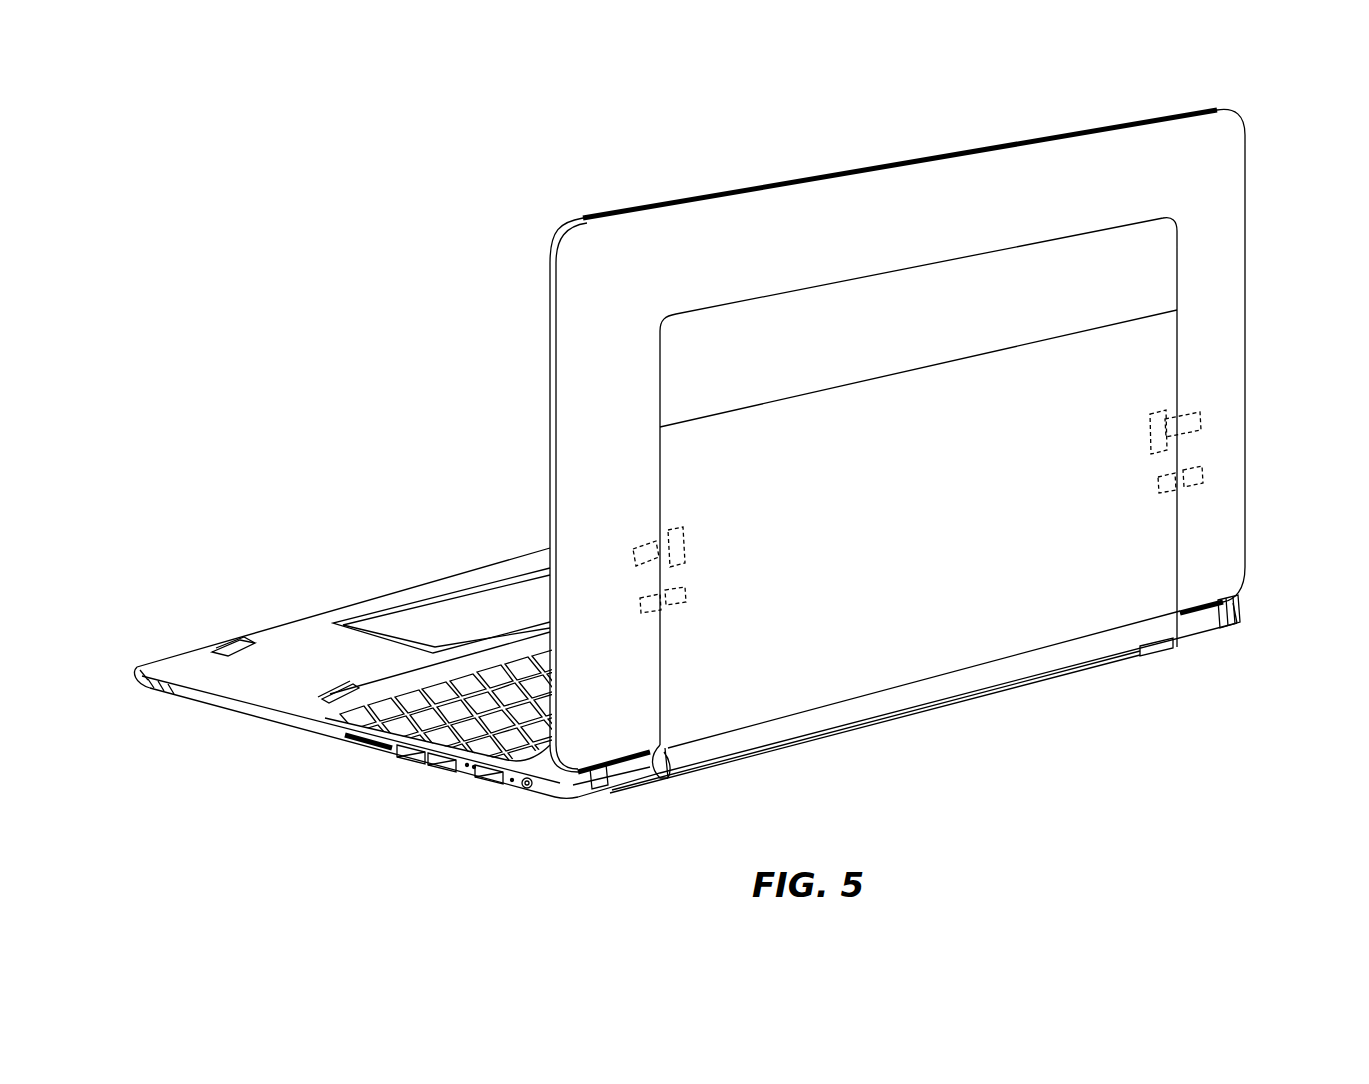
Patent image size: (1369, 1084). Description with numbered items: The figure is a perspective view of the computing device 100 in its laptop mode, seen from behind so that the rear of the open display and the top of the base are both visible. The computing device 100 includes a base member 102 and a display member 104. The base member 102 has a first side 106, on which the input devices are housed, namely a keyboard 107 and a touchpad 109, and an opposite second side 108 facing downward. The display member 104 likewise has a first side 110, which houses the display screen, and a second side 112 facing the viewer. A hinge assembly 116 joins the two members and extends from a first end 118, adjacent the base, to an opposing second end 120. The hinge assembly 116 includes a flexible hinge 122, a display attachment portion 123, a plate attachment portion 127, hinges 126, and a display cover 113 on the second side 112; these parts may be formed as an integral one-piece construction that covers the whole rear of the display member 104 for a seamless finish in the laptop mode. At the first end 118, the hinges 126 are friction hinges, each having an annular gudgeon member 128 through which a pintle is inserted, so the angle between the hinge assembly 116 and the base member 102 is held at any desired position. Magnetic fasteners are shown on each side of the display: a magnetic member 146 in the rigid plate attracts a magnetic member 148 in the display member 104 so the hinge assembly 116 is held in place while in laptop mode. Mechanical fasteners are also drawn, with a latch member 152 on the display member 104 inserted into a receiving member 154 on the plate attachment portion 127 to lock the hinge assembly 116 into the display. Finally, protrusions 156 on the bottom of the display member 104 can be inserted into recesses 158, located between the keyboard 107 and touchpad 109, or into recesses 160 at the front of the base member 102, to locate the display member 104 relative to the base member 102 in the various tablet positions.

The computing device 100 is at (283, 292).
The base member 102 is at (247, 722).
The display member 104 is at (574, 220).
The first side 106 is at (165, 660).
The keyboard 107 is at (420, 675).
The second side 108 is at (182, 693).
The touchpad 109 is at (465, 620).
The first side 110 is at (548, 410).
The second side 112 is at (833, 188).
The display cover 113 is at (902, 217).
The hinge assembly 116 is at (1190, 571).
The first end 118 is at (925, 717).
The second end 120 is at (985, 248).
The flexible hinge 122 is at (826, 410).
The display attachment portion 123 is at (913, 323).
The hinges 126 is at (660, 778).
The plate attachment portion 127 is at (918, 605).
The gudgeon member 128 is at (668, 778).
The magnetic member 146 is at (686, 598).
The magnetic member 148 is at (640, 604).
The latch member 152 is at (648, 548).
The receiving member 154 is at (683, 530).
The protrusions 156 is at (600, 792).
The recesses 158 is at (345, 686).
The recesses 160 is at (243, 641).